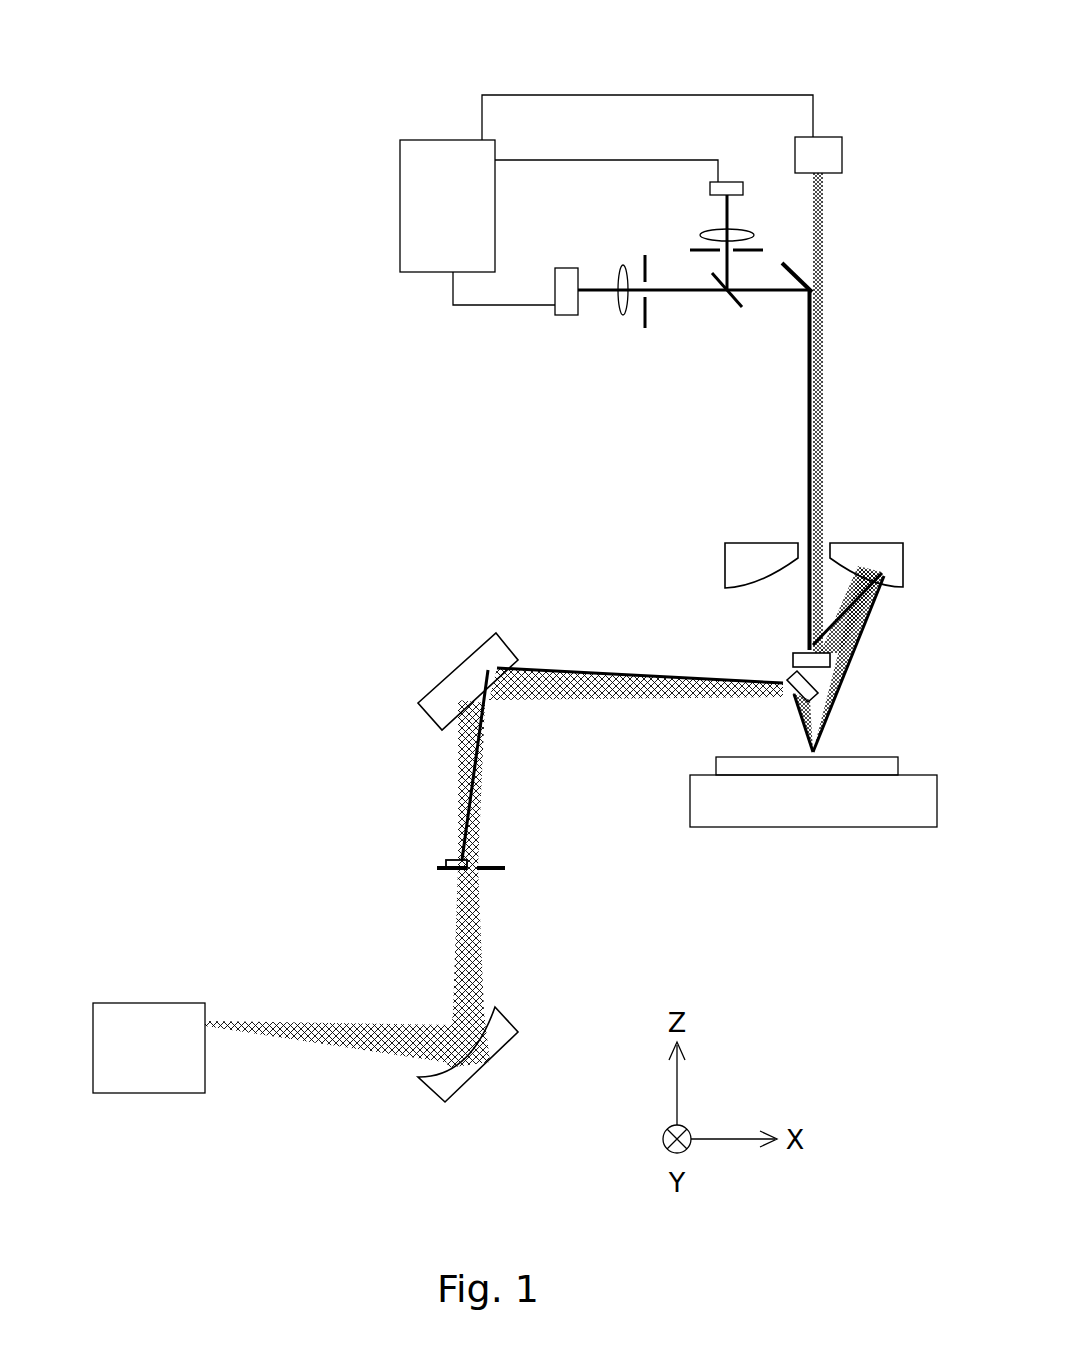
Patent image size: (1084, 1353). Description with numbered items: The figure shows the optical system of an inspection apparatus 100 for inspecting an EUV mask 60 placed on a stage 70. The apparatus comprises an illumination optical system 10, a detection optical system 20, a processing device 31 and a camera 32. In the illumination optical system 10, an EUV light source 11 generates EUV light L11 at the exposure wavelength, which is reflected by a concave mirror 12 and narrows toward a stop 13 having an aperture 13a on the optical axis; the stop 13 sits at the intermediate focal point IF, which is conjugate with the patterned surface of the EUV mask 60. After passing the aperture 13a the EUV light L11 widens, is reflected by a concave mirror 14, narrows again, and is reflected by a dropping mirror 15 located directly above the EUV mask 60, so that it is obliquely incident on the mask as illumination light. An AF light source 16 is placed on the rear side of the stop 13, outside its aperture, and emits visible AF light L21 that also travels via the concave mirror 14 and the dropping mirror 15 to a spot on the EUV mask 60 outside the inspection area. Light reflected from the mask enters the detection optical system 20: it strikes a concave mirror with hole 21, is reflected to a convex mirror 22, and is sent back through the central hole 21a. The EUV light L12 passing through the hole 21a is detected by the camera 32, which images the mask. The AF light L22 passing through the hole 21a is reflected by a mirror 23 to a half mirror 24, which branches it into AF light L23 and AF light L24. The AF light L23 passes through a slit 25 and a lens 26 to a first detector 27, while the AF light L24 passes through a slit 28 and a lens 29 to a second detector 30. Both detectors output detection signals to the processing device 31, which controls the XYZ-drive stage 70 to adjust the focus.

The inspection apparatus 100 is at (67, 29).
The illumination optical system 10 is at (320, 558).
The detection optical system 20 is at (428, 98).
The EUV light source 11 is at (150, 1093).
The concave mirror 12 is at (485, 1063).
The stop 13 is at (507, 873).
The aperture 13a is at (485, 853).
The intermediate focal point IF is at (550, 868).
The AF light source 16 is at (446, 862).
The concave mirror 14 is at (458, 662).
The dropping mirror 15 is at (786, 677).
The concave mirror with hole 21 is at (892, 542).
The hole 21a is at (800, 540).
The convex mirror 22 is at (793, 660).
The mirror 23 is at (795, 265).
The half mirror 24 is at (742, 307).
The slit 25 is at (645, 328).
The lens 26 is at (623, 316).
The first detector 27 is at (562, 268).
The slit 28 is at (690, 250).
The lens 29 is at (703, 233).
The second detector 30 is at (727, 182).
The processing device 31 is at (415, 272).
The camera 32 is at (842, 155).
The EUV mask 60 is at (716, 758).
The stage 70 is at (732, 813).
The EUV light L11 is at (317, 1045).
The AF light L21 is at (462, 830).
The EUV light L12 is at (866, 633).
The AF light L22 is at (842, 703).
The AF light L23 is at (695, 293).
The AF light L24 is at (722, 278).